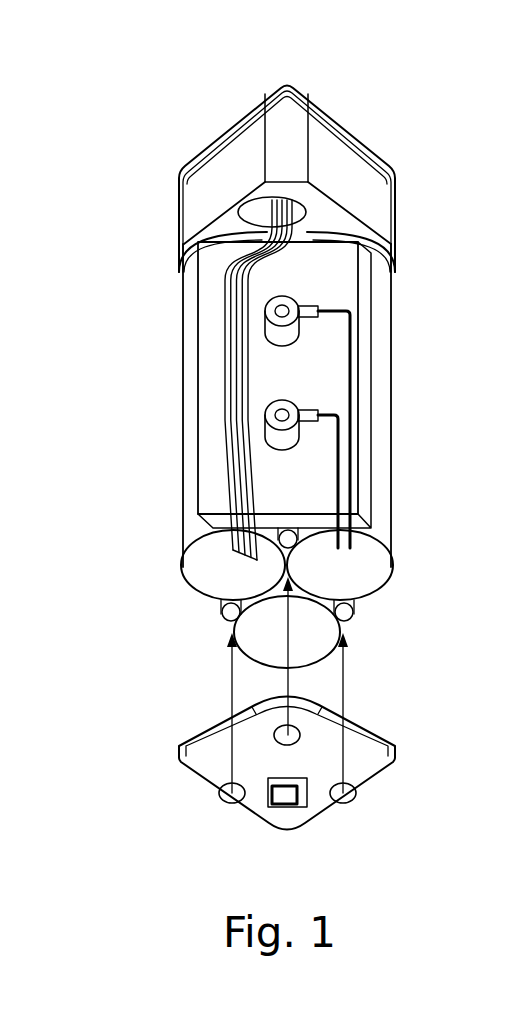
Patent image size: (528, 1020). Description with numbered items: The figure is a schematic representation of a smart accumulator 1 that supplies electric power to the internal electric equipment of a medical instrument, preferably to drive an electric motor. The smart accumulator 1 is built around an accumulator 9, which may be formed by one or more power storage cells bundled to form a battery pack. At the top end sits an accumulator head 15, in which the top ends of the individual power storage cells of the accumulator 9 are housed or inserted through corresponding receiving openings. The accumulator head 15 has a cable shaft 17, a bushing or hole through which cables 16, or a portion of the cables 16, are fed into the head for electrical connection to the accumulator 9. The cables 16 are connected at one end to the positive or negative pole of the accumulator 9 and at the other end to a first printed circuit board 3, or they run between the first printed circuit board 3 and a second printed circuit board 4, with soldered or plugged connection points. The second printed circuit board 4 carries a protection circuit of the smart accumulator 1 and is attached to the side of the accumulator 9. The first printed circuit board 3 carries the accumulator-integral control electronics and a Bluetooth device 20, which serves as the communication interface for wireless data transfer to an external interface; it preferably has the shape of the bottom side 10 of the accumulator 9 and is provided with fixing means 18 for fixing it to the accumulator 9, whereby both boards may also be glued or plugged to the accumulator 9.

The smart accumulator 1 is at (291, 415).
The first printed circuit board 3 is at (392, 723).
The second printed circuit board 4 is at (206, 425).
The accumulator 9 is at (195, 572).
The bottom side 10 is at (281, 793).
The accumulator head 15 is at (410, 208).
The cables 16 is at (230, 312).
The cable shaft 17 is at (252, 212).
The fixing means 18 is at (223, 790).
The Bluetooth device 20 is at (303, 800).